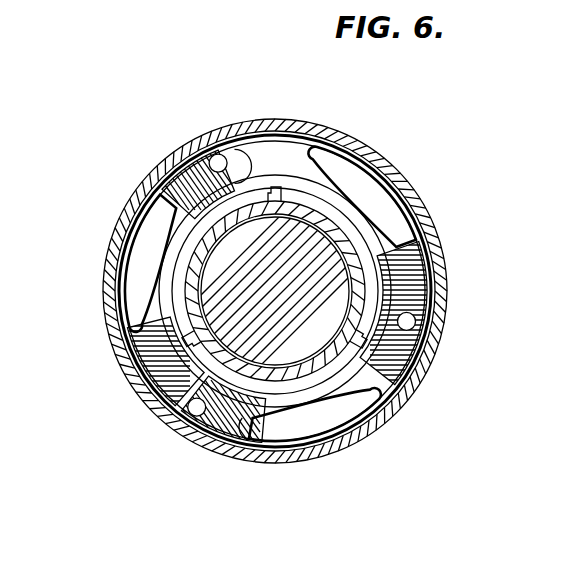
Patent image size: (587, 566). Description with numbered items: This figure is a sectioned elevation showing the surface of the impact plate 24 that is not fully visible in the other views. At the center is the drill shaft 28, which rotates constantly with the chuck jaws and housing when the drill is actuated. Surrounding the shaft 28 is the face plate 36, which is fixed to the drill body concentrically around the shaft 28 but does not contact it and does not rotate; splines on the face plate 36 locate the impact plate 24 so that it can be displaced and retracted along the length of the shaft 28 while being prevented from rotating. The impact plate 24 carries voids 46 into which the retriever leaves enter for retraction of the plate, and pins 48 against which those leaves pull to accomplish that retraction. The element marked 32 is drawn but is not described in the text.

The impact plate 24 is at (293, 155).
The drill shaft 28 is at (293, 283).
The roller 32 is at (222, 150).
The face plate 36 is at (196, 298).
The voids 46 is at (136, 279).
The pins 48 is at (180, 172).